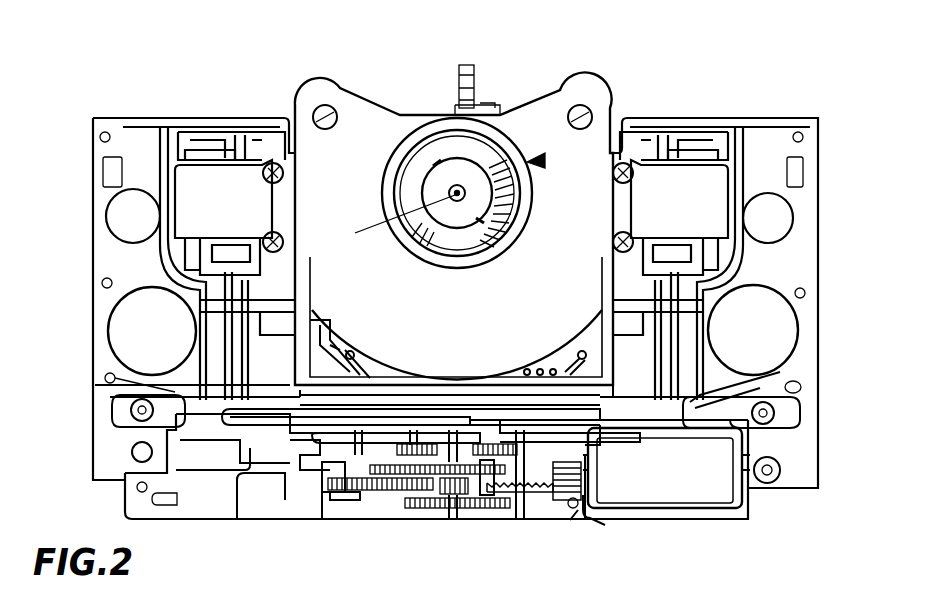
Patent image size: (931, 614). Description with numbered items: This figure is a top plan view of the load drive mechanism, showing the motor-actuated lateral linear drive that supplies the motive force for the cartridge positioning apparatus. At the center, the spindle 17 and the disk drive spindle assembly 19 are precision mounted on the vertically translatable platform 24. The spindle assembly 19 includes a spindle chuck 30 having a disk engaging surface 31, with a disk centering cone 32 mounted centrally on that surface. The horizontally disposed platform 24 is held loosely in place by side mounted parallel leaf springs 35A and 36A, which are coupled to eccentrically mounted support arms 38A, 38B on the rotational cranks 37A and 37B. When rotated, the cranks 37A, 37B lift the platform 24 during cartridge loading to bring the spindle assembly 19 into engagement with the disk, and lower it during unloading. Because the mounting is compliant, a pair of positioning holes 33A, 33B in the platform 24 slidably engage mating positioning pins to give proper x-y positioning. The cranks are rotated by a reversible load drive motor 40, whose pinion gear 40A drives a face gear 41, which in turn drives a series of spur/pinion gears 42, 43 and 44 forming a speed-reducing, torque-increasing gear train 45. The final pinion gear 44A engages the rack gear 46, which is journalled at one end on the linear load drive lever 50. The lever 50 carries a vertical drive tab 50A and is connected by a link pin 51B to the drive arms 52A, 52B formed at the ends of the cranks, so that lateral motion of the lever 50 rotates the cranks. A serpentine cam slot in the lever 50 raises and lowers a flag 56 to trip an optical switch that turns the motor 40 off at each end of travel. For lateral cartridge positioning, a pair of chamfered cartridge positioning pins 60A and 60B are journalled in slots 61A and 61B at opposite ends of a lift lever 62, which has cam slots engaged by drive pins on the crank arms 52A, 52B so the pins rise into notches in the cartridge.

The spindle 17 is at (410, 209).
The disk drive spindle assembly 19 is at (540, 160).
The vertically translatable platform 24 is at (393, 108).
The spindle chuck 30 is at (503, 258).
The disk engaging surface 31 is at (470, 262).
The disk centering cone 32 is at (512, 185).
The positioning hole 33A is at (330, 105).
The positioning hole 33B is at (582, 106).
The leaf spring 35A is at (213, 165).
The leaf spring 36A is at (700, 165).
The rotational crank 37A is at (190, 335).
The rotational crank 37B is at (690, 335).
The support arm 38A is at (185, 263).
The support arm 38B is at (735, 258).
The reversible load drive motor 40 is at (695, 497).
The pinion gear 40A is at (605, 505).
The face gear 41 is at (550, 523).
The spur/pinion gear 42 is at (490, 518).
The spur/pinion gear 43 is at (333, 488).
The spur/pinion gear 44 is at (400, 510).
The final pinion gear 44A is at (443, 502).
The gear train 45 is at (583, 543).
The rack gear 46 is at (433, 397).
The linear load drive lever 50 is at (335, 395).
The vertical drive tab 50A is at (510, 395).
The link pin 51B is at (690, 402).
The drive arm 52A is at (103, 377).
The drive arm 52B is at (805, 377).
The flag 56 is at (290, 440).
The cartridge positioning pin 60A is at (128, 410).
The cartridge positioning pin 60B is at (775, 412).
The slot 61A is at (135, 422).
The slot 61B is at (778, 428).
The lift lever 62 is at (200, 413).